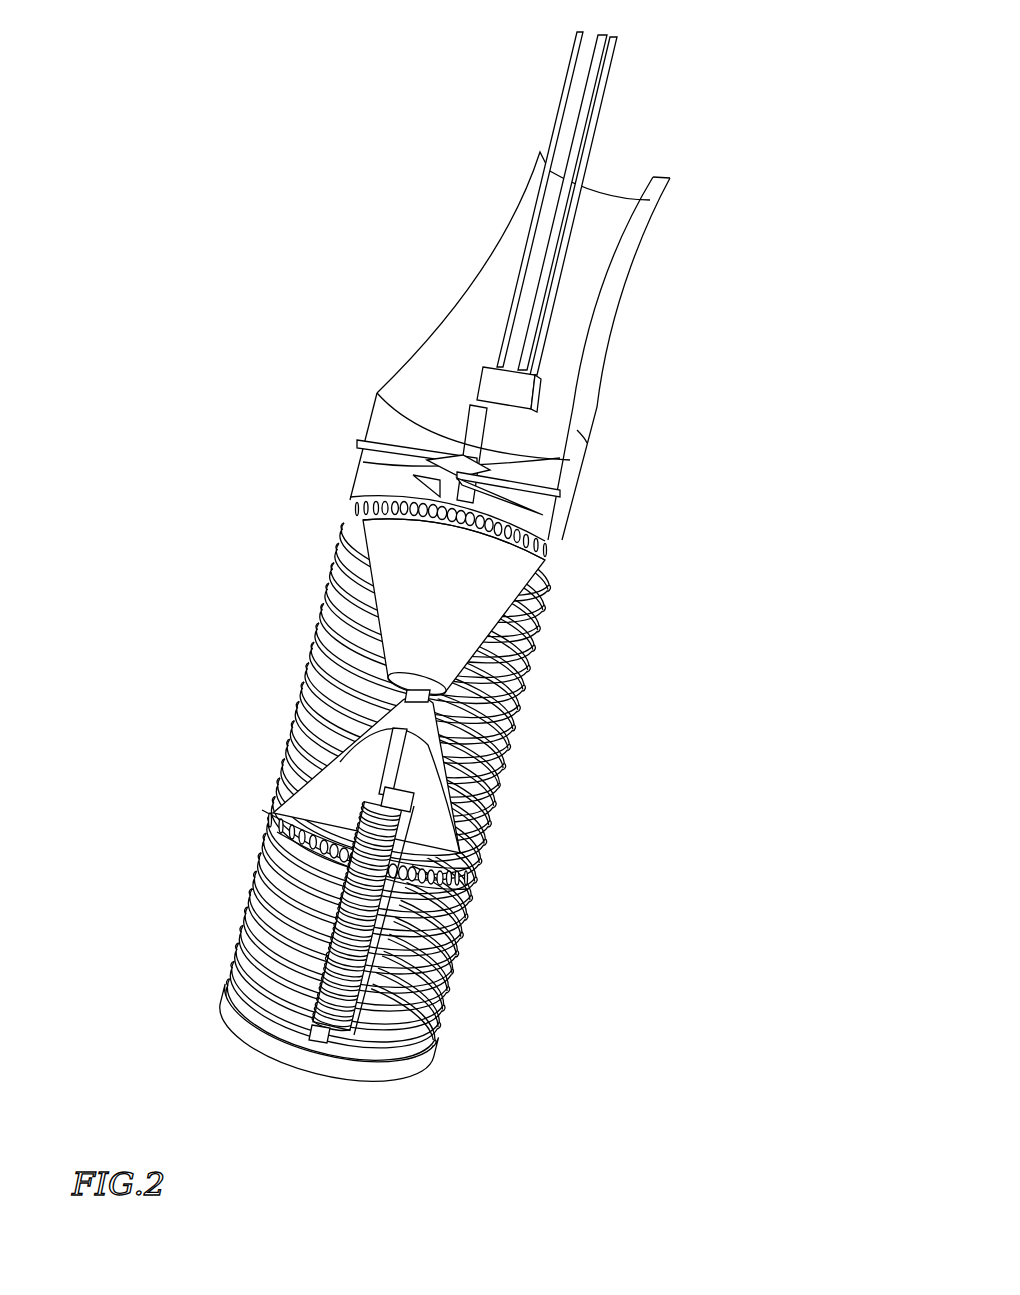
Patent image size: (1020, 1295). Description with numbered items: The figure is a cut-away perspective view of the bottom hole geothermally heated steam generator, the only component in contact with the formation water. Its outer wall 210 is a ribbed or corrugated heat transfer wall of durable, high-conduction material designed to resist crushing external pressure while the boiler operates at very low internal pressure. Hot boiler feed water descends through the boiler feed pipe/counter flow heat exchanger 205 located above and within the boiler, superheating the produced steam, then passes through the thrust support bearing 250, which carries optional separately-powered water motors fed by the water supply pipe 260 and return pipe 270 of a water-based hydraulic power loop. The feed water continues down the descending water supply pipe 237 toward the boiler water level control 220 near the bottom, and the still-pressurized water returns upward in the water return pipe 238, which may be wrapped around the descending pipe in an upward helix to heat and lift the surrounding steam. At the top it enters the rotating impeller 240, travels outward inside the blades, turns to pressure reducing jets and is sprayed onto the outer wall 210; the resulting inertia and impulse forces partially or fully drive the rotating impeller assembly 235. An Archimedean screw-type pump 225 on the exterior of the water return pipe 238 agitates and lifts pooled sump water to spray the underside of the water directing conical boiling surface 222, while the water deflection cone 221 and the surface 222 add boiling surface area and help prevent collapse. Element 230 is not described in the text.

The boiler feed pipe/counter flow heat exchanger 205 is at (412, 375).
The outer wall 210 is at (370, 480).
The boiler water level control 220 is at (333, 1037).
The water deflection cone 221 is at (477, 608).
The water directing conical boiling surface 222 is at (420, 827).
The Archimedean screw-type pump 225 is at (325, 950).
The upper ring 230 is at (357, 508).
The rotating impeller assembly 235 is at (553, 497).
The water supply pipe 237 is at (500, 435).
The water return pipe 238 is at (410, 790).
The rotating impeller 240 is at (387, 443).
The thrust support bearing 250 is at (540, 388).
The water supply pipe 260 is at (598, 130).
The return pipe 270 is at (603, 80).